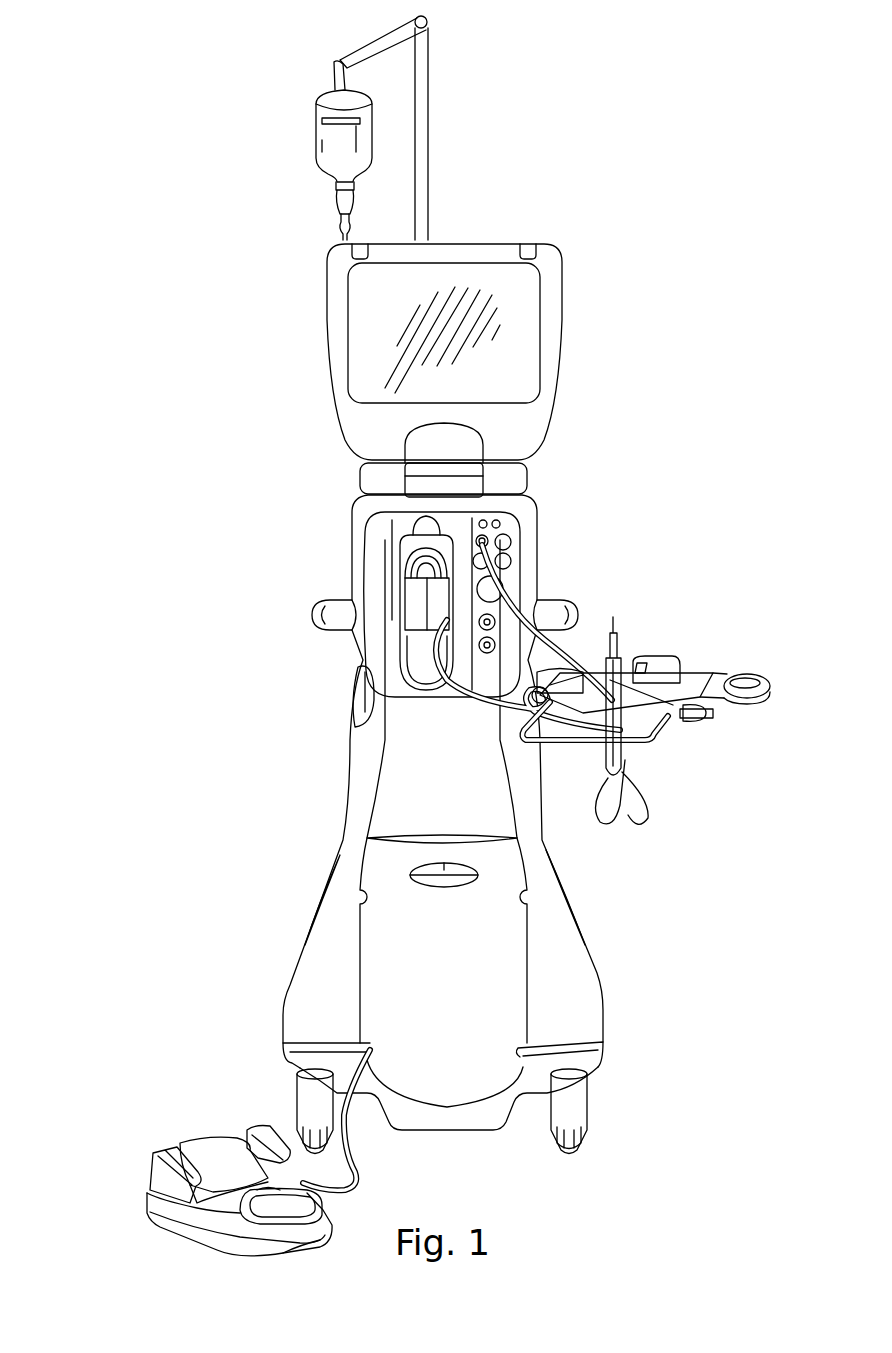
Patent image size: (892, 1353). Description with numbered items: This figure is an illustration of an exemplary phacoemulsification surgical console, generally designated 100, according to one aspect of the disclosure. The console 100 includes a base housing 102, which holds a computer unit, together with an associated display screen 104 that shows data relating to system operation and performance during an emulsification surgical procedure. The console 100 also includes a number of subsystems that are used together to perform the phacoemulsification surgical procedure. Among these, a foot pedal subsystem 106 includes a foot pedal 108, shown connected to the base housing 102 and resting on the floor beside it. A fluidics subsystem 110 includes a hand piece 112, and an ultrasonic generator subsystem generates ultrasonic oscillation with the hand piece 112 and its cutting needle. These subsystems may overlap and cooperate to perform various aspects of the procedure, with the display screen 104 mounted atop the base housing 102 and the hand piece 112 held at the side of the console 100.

The emulsification surgical console 100 is at (541, 57).
The base housing 102 is at (328, 781).
The display screen 104 is at (328, 331).
The foot pedal subsystem 106 is at (188, 1128).
The foot pedal 108 is at (158, 1170).
The fluidics subsystem 110 is at (321, 581).
The hand piece 112 is at (616, 612).